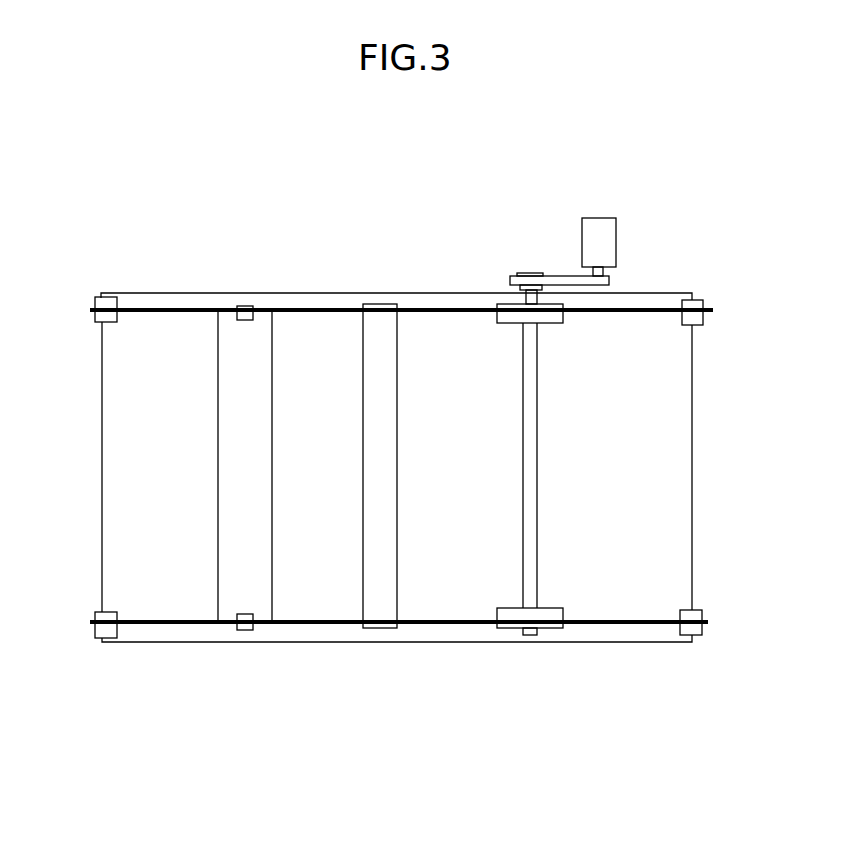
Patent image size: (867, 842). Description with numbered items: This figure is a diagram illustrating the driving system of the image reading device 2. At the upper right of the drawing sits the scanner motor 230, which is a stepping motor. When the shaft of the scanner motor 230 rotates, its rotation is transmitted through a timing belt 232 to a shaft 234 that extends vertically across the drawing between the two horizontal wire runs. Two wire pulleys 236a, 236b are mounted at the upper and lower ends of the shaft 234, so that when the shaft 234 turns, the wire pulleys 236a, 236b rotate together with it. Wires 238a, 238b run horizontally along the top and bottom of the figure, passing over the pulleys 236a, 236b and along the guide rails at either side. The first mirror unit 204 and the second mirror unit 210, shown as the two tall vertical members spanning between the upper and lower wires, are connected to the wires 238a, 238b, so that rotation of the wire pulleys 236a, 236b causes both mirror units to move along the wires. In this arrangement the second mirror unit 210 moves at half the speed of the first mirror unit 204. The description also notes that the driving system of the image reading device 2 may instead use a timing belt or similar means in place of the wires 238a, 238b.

The image reading device 2 is at (698, 195).
The first mirror unit 204 is at (363, 343).
The second mirror unit 210 is at (272, 342).
The scanner motor 230 is at (617, 245).
The timing belt 232 is at (557, 275).
The shaft 234 is at (523, 296).
The wire pulley 236a is at (558, 302).
The wire pulley 236b is at (553, 630).
The wire 238a is at (170, 293).
The wire 238b is at (172, 625).